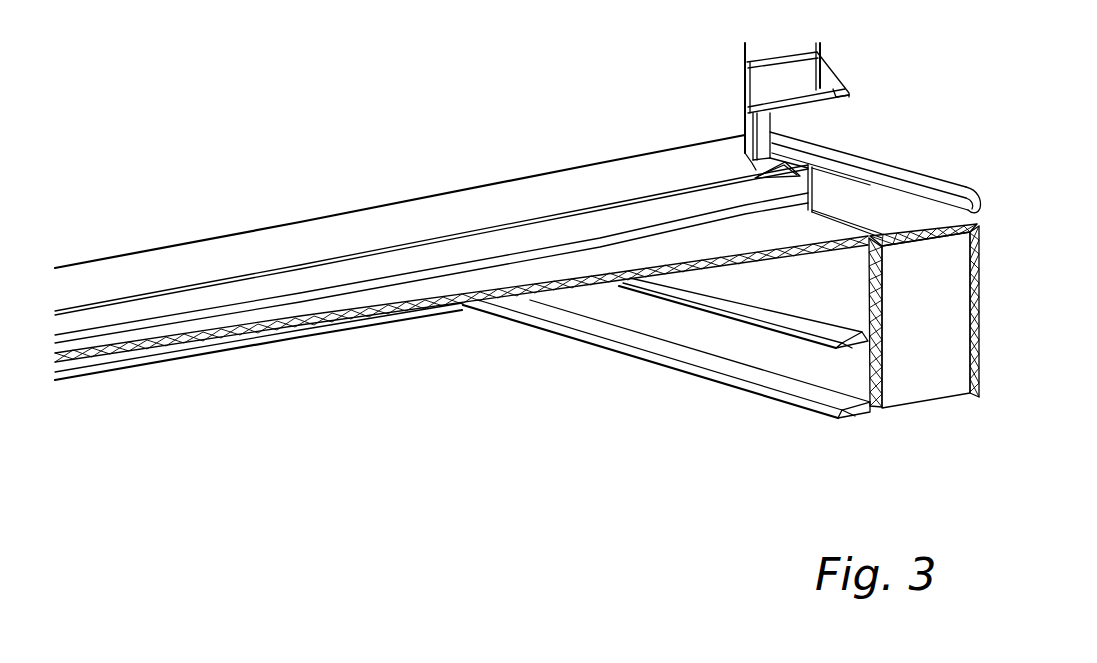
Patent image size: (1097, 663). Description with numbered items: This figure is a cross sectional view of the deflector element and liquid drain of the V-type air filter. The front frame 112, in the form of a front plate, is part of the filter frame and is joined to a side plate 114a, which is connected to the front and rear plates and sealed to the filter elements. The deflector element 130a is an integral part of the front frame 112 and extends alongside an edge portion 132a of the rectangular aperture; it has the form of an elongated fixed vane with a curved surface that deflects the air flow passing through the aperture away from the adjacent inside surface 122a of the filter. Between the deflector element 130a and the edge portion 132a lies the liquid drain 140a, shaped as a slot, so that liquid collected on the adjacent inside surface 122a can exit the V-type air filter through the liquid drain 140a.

The front frame 112 is at (983, 318).
The side plate 114a is at (376, 318).
The adjacent inside surface 122a is at (722, 245).
The deflector element 130a is at (863, 150).
The edge portion 132a is at (910, 225).
The liquid drain 140a is at (982, 218).